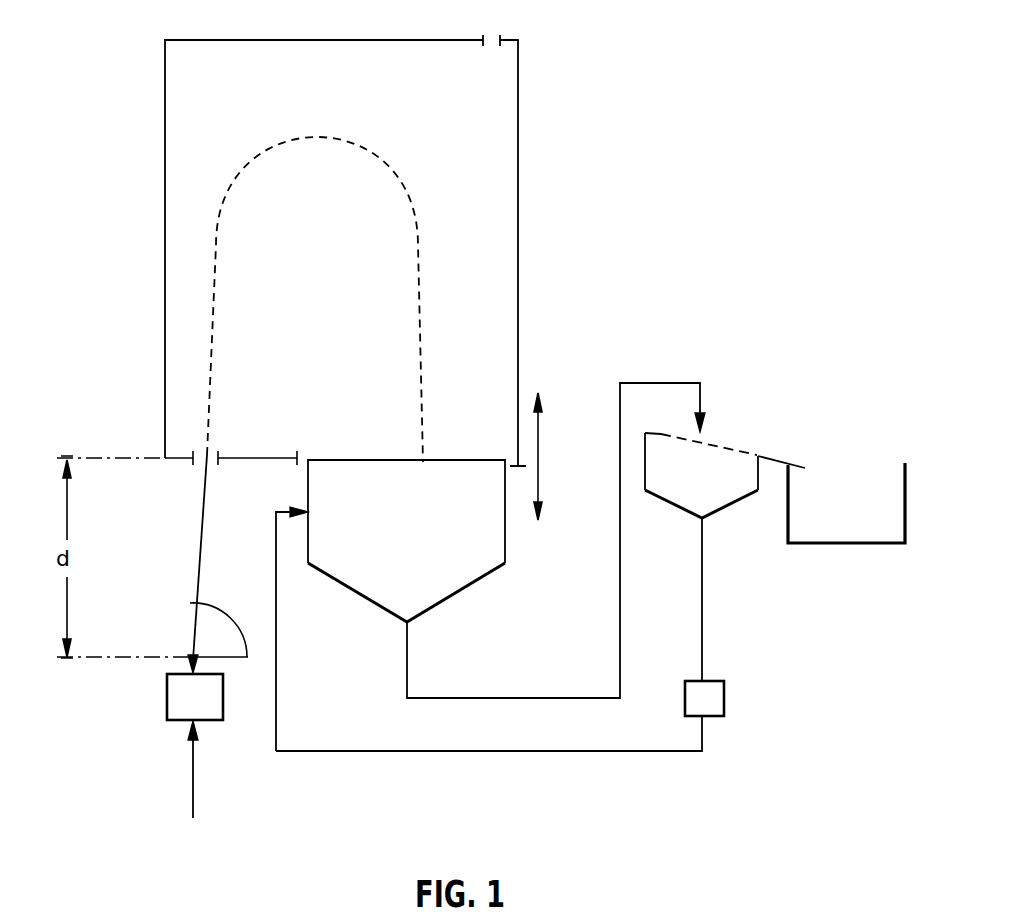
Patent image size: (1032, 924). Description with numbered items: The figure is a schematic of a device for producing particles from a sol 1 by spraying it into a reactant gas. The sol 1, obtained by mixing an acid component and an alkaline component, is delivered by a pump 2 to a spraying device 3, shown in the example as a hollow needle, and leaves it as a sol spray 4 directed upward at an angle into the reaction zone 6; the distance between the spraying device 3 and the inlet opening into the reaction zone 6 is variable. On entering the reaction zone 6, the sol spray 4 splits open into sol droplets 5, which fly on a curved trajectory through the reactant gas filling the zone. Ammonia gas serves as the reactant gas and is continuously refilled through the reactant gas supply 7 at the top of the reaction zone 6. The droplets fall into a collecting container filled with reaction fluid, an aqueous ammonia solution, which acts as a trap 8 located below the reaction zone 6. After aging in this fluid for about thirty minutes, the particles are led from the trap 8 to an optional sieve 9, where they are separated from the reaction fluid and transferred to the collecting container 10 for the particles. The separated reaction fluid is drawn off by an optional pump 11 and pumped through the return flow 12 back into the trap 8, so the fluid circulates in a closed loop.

The sol 1 is at (193, 810).
The pump 2 is at (167, 701).
The spraying device 3 is at (196, 638).
The sol spray 4 is at (200, 520).
The sol droplets 5 is at (212, 395).
The reaction zone 6 is at (165, 259).
The reactant gas supply 7 is at (496, 36).
The trap 8 is at (412, 544).
The sieve 9 is at (706, 494).
The collecting container for the particles 10 is at (859, 514).
The pump 11 is at (724, 700).
The return flow 12 is at (435, 753).